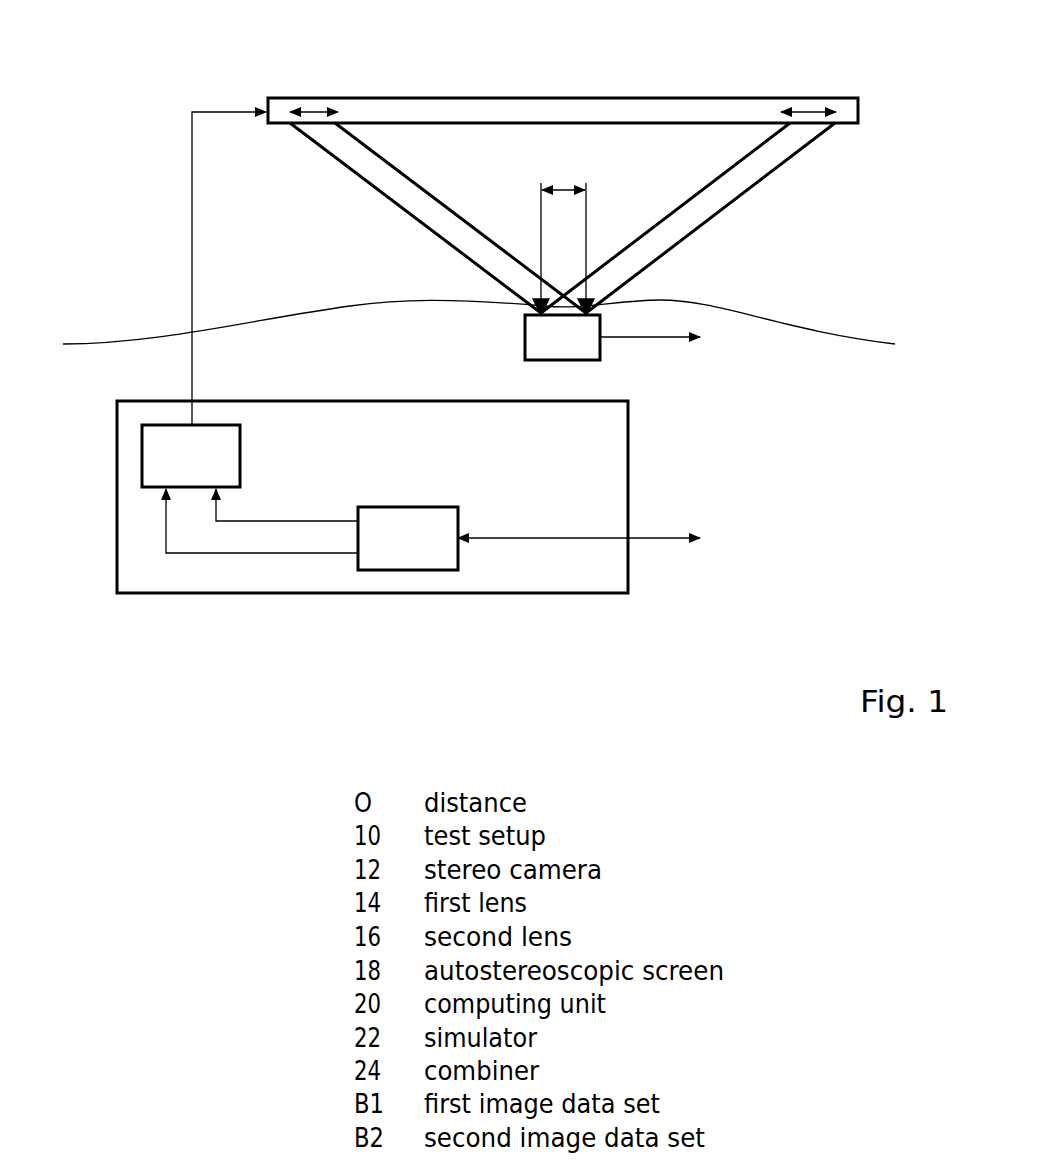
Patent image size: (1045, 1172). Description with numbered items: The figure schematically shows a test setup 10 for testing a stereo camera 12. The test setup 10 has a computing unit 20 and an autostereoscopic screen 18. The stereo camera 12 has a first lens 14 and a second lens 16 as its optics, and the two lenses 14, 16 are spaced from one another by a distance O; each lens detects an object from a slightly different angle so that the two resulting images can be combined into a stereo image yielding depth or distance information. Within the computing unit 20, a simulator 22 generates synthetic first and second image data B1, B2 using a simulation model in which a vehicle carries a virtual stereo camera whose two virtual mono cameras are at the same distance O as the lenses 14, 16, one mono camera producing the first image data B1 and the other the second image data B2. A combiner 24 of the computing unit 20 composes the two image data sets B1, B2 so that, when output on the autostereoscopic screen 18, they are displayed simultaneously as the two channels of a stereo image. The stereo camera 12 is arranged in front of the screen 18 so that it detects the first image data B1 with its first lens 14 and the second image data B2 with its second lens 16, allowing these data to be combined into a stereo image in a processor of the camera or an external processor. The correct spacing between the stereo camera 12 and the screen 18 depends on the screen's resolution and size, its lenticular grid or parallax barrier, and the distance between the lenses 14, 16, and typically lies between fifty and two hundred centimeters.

The distance O is at (313, 108).
The test setup 10 is at (480, 349).
The stereo camera 12 is at (612, 337).
The first lens 14 is at (287, 332).
The second lens 16 is at (737, 332).
The autostereoscopic screen 18 is at (618, 115).
The computing unit 20 is at (408, 549).
The simulator 22 is at (529, 538).
The combiner 24 is at (191, 456).
The first image data B1 is at (267, 521).
The second image data B2 is at (202, 553).